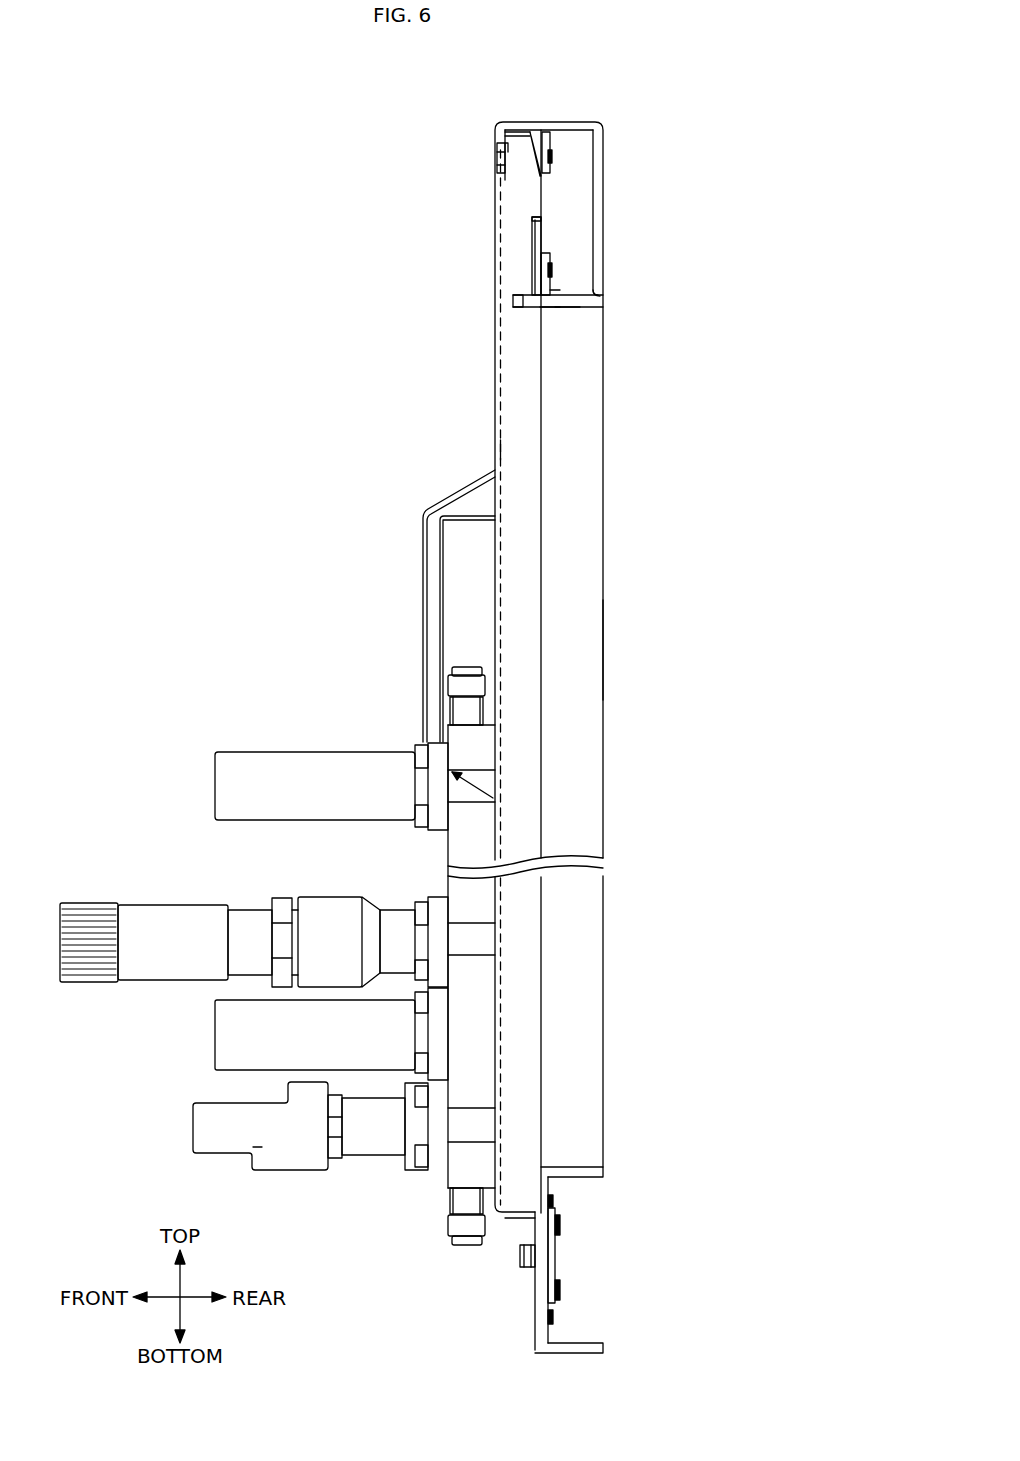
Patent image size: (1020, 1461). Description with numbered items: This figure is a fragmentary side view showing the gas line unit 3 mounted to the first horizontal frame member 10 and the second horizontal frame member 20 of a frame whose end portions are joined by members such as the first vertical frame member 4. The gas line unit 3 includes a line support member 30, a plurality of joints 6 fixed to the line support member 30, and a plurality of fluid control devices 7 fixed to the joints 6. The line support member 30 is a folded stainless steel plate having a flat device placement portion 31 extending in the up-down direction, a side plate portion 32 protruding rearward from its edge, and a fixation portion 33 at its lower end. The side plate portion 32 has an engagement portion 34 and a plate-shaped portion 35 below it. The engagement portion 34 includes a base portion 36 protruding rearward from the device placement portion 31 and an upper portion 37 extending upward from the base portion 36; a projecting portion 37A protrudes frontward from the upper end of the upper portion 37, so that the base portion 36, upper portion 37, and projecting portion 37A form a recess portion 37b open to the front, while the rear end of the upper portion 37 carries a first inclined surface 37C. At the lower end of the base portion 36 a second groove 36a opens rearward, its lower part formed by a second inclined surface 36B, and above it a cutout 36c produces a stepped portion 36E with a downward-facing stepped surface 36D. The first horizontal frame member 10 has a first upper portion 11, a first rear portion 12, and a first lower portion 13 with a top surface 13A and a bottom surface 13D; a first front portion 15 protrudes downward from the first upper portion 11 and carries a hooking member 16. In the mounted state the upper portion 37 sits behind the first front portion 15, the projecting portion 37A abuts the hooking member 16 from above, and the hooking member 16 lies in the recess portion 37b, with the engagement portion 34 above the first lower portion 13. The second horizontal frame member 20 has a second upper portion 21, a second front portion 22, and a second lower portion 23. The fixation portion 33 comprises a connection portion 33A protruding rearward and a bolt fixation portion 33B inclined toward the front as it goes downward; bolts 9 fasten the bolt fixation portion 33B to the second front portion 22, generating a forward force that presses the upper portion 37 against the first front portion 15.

The gas line unit 3 is at (148, 1152).
The first vertical frame member 4 is at (590, 660).
The joint 6 is at (470, 892).
The fluid control device 7 is at (284, 768).
The bolt 9 is at (520, 1262).
The first horizontal frame member 10 is at (622, 136).
The first upper portion 11 is at (580, 125).
The first rear portion 12 is at (597, 153).
The first lower portion 13 is at (597, 304).
The top surface 13A is at (594, 298).
The bottom surface 13D is at (556, 309).
The first front portion 15 is at (505, 142).
The hooking member 16 is at (505, 153).
The second horizontal frame member 20 is at (622, 1275).
The second upper portion 21 is at (585, 1173).
The second front portion 22 is at (545, 1221).
The second lower portion 23 is at (580, 1345).
The line support member 30 is at (447, 362).
The device placement portion 31 is at (496, 449).
The side plate portion 32 is at (541, 482).
The fixation portion 33 is at (387, 1248).
The connection portion 33A is at (515, 1214).
The bolt fixation portion 33B is at (535, 1250).
The engagement portion 34 is at (432, 180).
The plate-shaped portion 35 is at (520, 546).
The base portion 36 is at (521, 248).
The second groove 36a is at (558, 293).
The second inclined surface 36B is at (567, 308).
The cutout 36c is at (545, 262).
The stepped surface 36D is at (541, 223).
The stepped portion 36E is at (551, 210).
The upper portion 37 is at (520, 165).
The projecting portion 37A is at (536, 166).
The recess portion 37b is at (499, 160).
The first inclined surface 37C is at (546, 170).